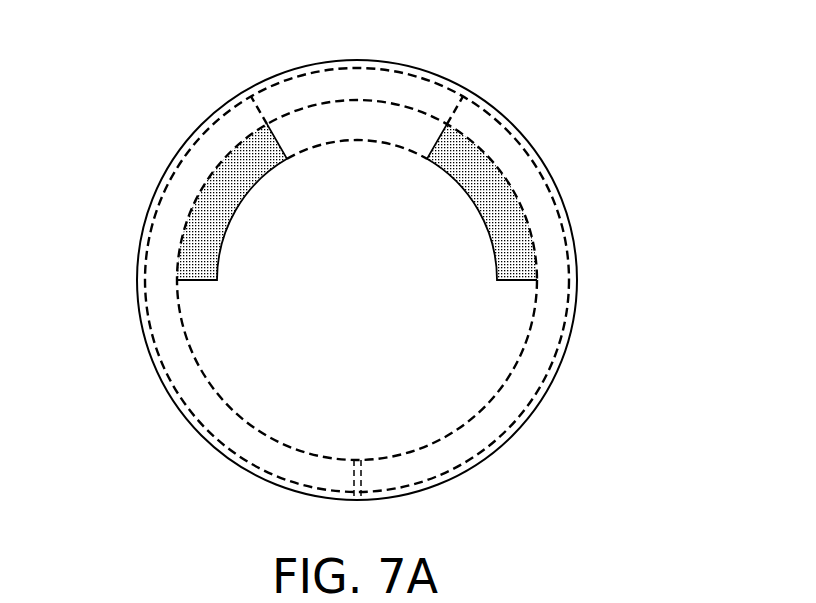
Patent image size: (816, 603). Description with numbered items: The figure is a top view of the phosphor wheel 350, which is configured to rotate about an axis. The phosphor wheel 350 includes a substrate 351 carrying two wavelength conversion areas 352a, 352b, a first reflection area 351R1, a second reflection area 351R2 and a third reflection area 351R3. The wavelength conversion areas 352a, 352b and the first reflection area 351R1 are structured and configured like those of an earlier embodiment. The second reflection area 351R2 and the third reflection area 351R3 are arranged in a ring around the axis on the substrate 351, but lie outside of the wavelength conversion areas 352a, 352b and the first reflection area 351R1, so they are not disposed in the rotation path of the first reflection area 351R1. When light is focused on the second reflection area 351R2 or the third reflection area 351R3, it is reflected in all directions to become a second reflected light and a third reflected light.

The phosphor wheel 350 is at (108, 28).
The substrate 351 is at (334, 86).
The first reflection area 351R1 is at (377, 122).
The second reflection area 351R2 is at (535, 358).
The third reflection area 351R3 is at (213, 412).
The wavelength conversion area 352a is at (495, 192).
The wavelength conversion area 352b is at (223, 190).